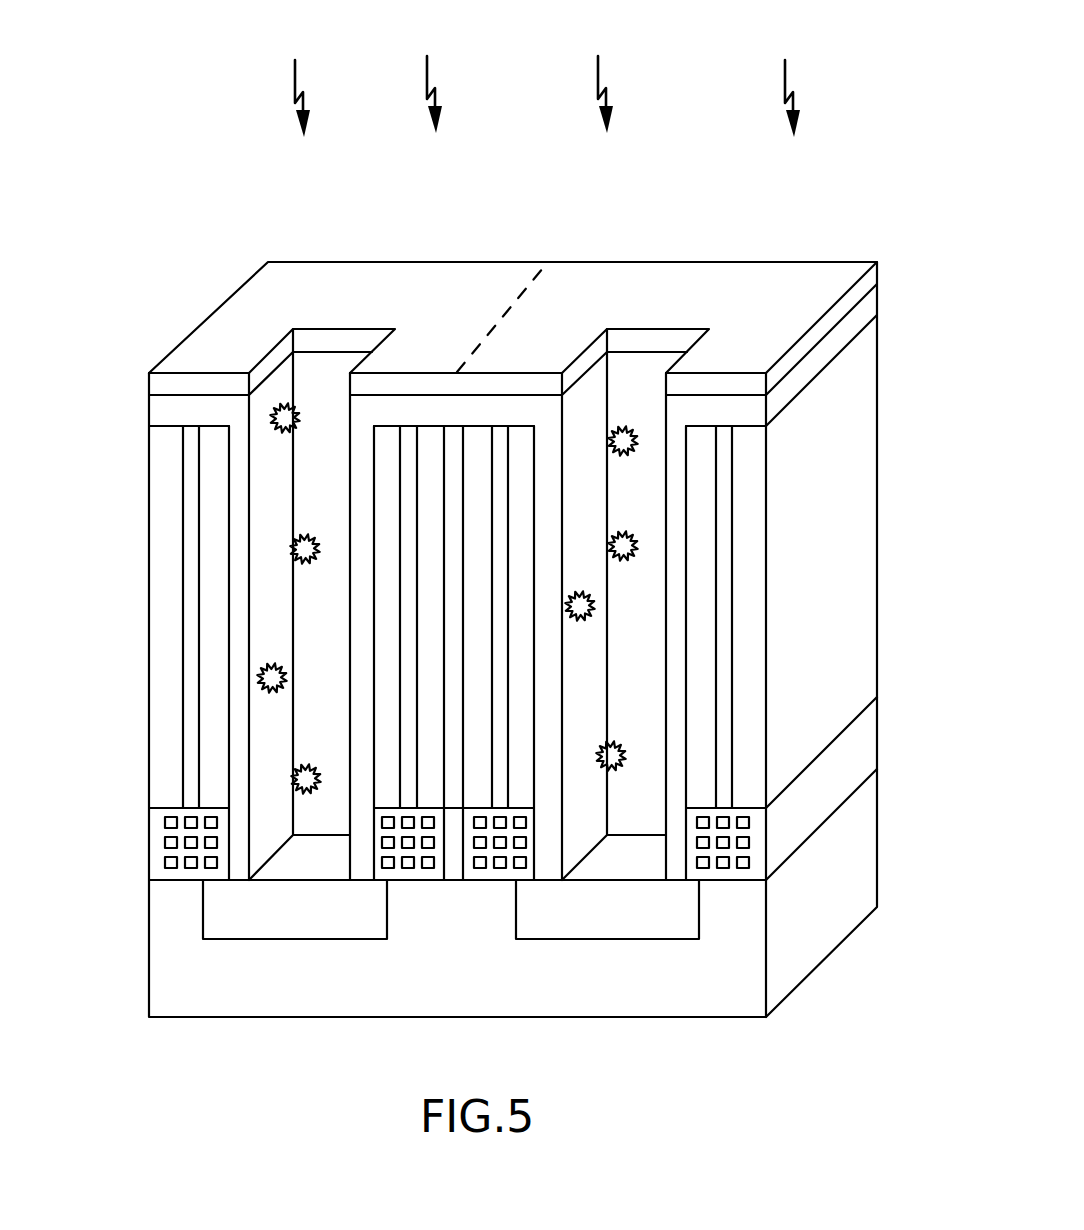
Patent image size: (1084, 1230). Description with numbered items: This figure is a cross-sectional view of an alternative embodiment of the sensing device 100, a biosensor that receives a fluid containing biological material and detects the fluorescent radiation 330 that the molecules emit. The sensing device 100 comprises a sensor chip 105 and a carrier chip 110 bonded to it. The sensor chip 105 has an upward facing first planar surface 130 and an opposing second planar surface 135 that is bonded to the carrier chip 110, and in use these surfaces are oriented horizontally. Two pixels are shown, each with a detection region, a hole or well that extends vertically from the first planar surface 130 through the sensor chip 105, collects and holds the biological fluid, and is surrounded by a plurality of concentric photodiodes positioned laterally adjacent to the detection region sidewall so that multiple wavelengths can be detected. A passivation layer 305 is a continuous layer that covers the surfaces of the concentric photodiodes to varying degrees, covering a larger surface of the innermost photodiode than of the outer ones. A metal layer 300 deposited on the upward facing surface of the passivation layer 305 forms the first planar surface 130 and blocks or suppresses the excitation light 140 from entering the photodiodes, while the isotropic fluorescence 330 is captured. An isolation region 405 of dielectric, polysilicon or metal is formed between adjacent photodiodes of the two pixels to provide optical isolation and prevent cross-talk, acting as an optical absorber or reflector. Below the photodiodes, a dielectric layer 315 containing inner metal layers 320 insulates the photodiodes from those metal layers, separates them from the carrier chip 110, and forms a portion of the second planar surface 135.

The sensing device 100 is at (152, 194).
The sensor chip 105 is at (890, 263).
The carrier chip 110 is at (897, 768).
The first planar surface 130 is at (285, 268).
The second planar surface 135 is at (170, 900).
The excitation light 140 is at (547, 79).
The metal layer 300 is at (170, 381).
The passivation layer 305 is at (170, 410).
The dielectric layer 315 is at (157, 876).
The inner metal layers 320 is at (157, 841).
The fluorescent radiation 330 is at (298, 423).
The isolation region 405 is at (455, 435).